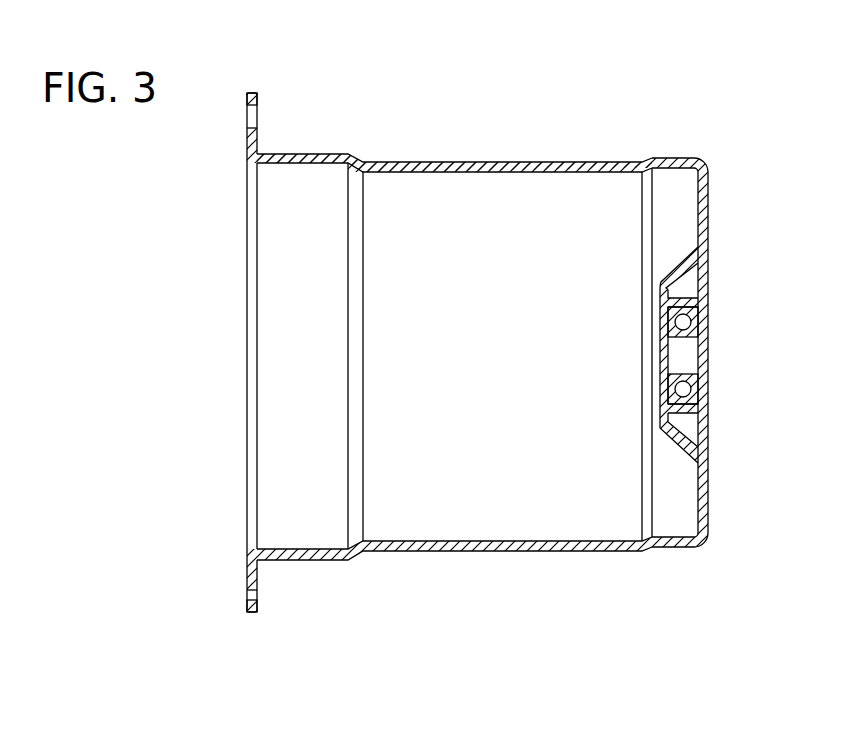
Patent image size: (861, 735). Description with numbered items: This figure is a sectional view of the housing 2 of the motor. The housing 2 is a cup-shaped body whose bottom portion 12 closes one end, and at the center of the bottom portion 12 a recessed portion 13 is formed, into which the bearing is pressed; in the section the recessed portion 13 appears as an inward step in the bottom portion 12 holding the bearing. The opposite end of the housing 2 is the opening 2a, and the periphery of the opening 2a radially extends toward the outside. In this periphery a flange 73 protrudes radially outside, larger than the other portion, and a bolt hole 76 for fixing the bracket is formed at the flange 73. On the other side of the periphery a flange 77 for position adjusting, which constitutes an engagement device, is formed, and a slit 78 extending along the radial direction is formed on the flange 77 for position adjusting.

The housing 2 is at (483, 164).
The opening 2a is at (275, 291).
The bottom portion 12 is at (709, 211).
The recessed portion 13 is at (683, 421).
The flange 73 is at (259, 101).
The bolt hole 76 is at (259, 128).
The flange for position adjusting 77 is at (246, 576).
The slit 78 is at (246, 600).